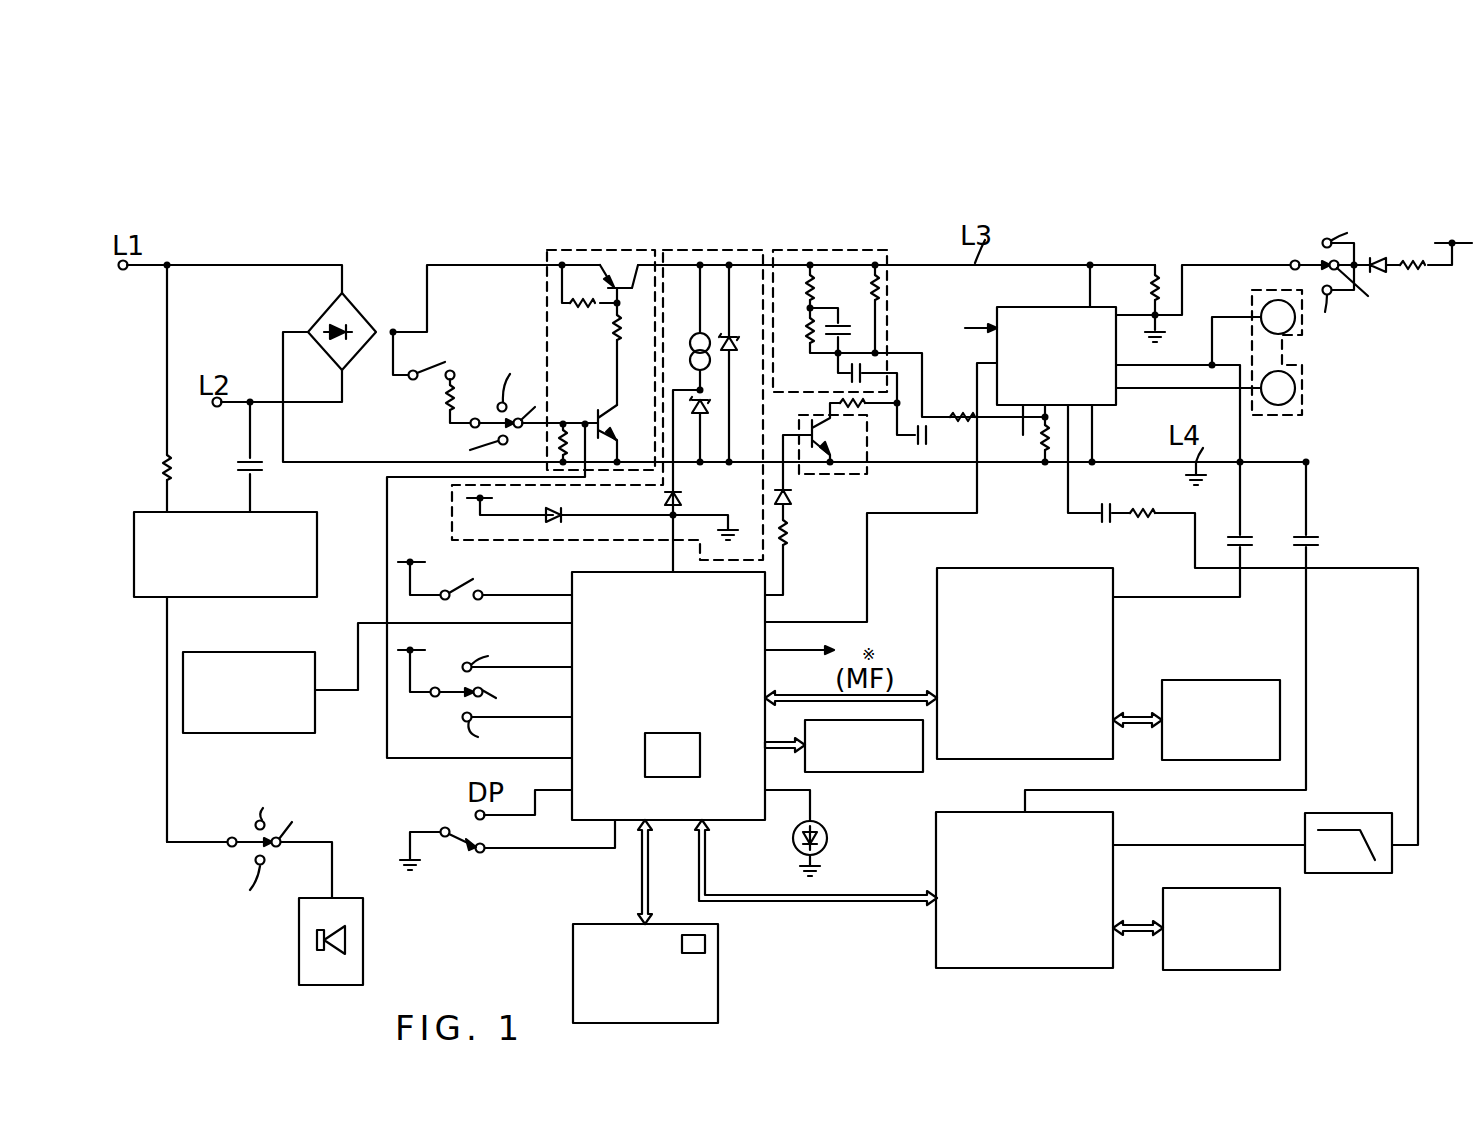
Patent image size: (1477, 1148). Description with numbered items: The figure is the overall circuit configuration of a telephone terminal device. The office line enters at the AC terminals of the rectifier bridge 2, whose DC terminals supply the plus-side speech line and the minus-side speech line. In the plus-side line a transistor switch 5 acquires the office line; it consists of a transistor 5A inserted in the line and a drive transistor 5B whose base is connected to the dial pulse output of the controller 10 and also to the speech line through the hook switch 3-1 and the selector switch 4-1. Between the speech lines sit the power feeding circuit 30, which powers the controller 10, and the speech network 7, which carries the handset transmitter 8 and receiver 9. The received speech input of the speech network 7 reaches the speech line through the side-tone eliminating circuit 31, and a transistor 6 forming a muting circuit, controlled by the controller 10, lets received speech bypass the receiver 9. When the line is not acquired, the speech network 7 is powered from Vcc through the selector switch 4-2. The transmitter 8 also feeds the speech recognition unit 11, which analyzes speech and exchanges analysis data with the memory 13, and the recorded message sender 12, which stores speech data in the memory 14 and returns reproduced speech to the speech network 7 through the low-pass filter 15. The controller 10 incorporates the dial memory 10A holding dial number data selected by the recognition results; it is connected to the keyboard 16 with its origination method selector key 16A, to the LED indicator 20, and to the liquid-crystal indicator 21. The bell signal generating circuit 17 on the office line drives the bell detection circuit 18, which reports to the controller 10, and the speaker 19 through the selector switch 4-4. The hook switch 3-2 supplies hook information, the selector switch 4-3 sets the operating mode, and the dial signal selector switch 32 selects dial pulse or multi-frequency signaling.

The rectifier bridge 2 is at (350, 314).
The hook switch 3-1 is at (447, 360).
The selector switch 4-1 is at (480, 398).
The transistor switch 5 is at (521, 481).
The transistor 5A is at (618, 262).
The drive transistor 5B is at (600, 414).
The power feeding circuit 30 is at (700, 254).
The side-tone eliminating circuit 31 is at (818, 254).
The transistor 6 is at (850, 474).
The speech network 7 is at (1026, 306).
The handset transmitter 8 is at (1260, 306).
The handset receiver 9 is at (1300, 388).
The selector switch 4-2 is at (1288, 250).
The controller 10 is at (668, 685).
The dial memory 10A is at (672, 777).
The speech recognition unit 11 is at (1040, 568).
The recorded message sender unit 12 is at (1025, 968).
The memory 13 is at (1230, 680).
The memory 14 is at (1225, 970).
The low-pass filter 15 is at (1335, 812).
The keyboard 16 is at (682, 975).
The origination method selector key 16A is at (705, 944).
The bell signal generating circuit 17 is at (317, 558).
The bell detection circuit 18 is at (315, 712).
The speaker 19 is at (299, 940).
The LED indicator 20 is at (827, 832).
The liquid-crystal indicator 21 is at (864, 774).
The dial signal selector switch 32 is at (445, 866).
The hook switch 3-2 is at (478, 577).
The selector switch 4-3 is at (437, 710).
The selector switch 4-4 is at (229, 827).